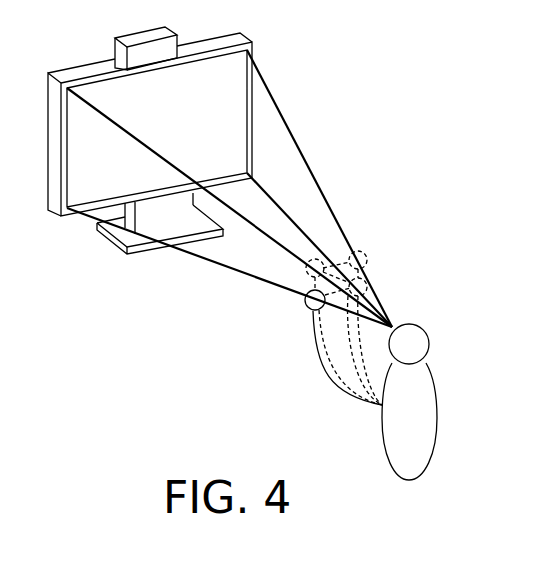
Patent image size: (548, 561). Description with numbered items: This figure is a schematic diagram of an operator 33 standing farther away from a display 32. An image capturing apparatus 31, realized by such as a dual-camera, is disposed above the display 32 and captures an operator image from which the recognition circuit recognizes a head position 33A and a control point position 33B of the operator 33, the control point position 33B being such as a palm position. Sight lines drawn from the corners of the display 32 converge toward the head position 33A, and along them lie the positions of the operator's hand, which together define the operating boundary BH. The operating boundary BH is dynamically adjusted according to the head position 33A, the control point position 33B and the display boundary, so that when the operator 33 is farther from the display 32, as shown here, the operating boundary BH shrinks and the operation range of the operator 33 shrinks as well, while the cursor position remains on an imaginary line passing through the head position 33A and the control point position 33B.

The image capturing apparatus 31 is at (128, 42).
The display 32 is at (242, 36).
The operating boundary BH is at (367, 270).
The operator 33 is at (423, 400).
The head position 33A is at (428, 343).
The control point position 33B is at (305, 303).